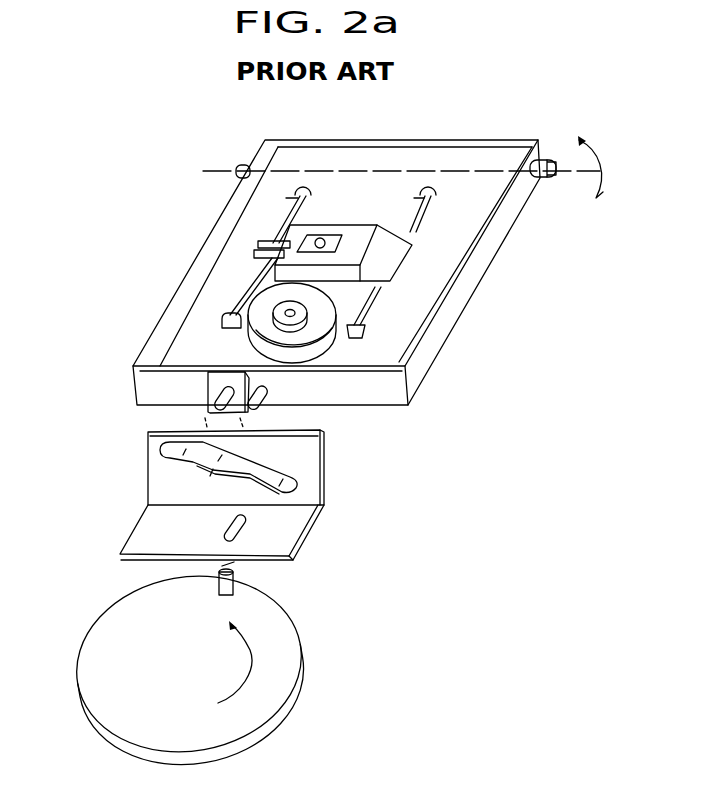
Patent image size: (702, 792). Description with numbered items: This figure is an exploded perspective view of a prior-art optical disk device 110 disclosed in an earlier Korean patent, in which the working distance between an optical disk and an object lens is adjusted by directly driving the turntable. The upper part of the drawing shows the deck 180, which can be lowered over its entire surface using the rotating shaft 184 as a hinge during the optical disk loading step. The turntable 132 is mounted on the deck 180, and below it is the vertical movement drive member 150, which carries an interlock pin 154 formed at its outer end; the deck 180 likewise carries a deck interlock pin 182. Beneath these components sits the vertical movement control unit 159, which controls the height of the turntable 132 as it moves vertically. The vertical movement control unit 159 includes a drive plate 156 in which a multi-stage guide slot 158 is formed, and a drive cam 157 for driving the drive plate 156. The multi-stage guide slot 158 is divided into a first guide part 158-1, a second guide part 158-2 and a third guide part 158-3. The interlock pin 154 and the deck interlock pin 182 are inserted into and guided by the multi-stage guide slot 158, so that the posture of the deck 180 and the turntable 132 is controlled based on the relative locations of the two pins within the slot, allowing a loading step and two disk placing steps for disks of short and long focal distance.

The optical disk device 110 is at (210, 142).
The turntable 132 is at (265, 330).
The vertical movement drive member 150 is at (218, 384).
The interlock pin 154 is at (210, 411).
The drive plate 156 is at (338, 499).
The drive cam 157 is at (292, 664).
The multi-stage guide slot 158 is at (70, 456).
The first guide part 158-1 is at (272, 488).
The second guide part 158-2 is at (215, 466).
The third guide part 158-3 is at (165, 450).
The vertical movement control unit 159 is at (320, 525).
The deck 180 is at (472, 272).
The deck interlock pin 182 is at (268, 397).
The rotating shaft 184 is at (555, 160).